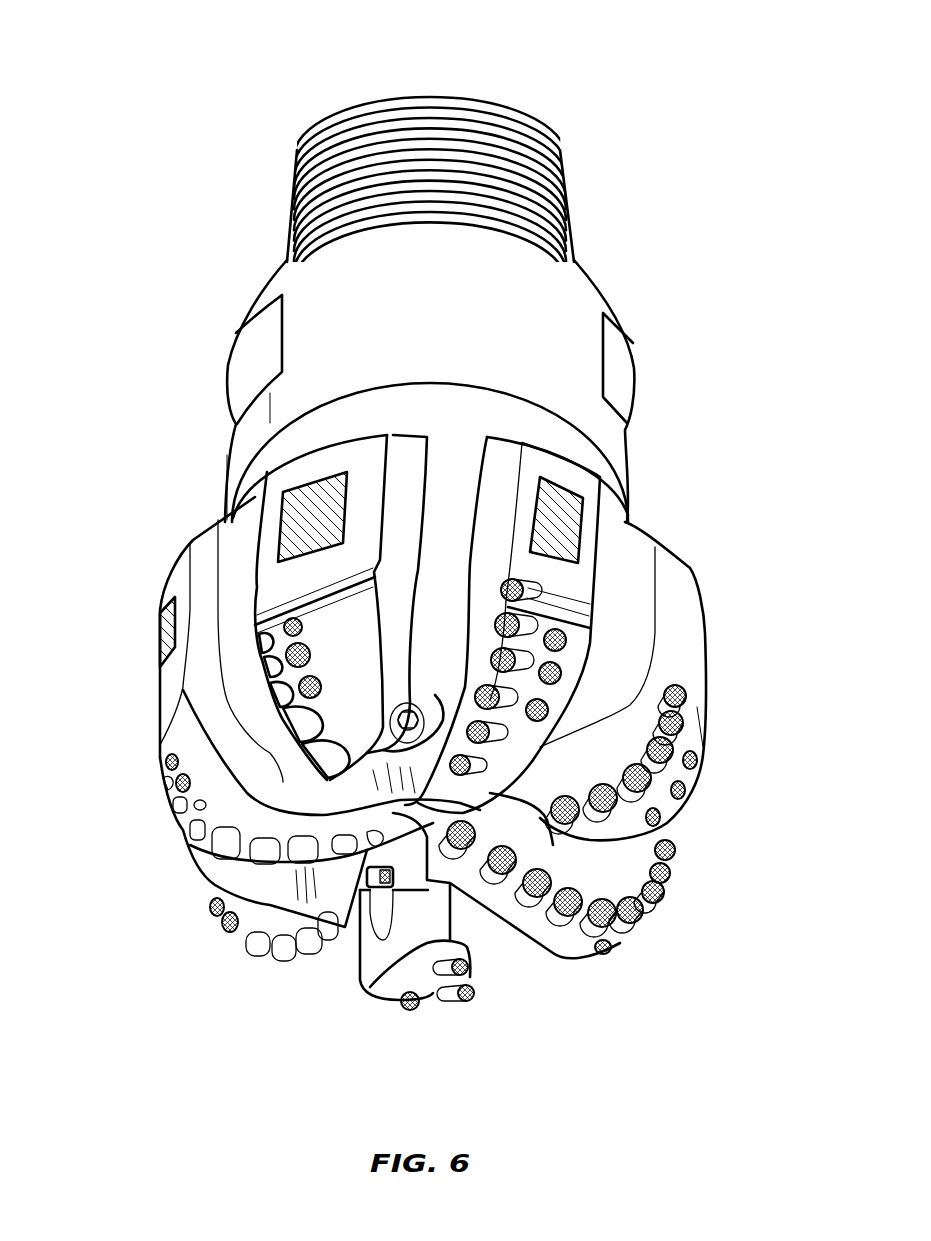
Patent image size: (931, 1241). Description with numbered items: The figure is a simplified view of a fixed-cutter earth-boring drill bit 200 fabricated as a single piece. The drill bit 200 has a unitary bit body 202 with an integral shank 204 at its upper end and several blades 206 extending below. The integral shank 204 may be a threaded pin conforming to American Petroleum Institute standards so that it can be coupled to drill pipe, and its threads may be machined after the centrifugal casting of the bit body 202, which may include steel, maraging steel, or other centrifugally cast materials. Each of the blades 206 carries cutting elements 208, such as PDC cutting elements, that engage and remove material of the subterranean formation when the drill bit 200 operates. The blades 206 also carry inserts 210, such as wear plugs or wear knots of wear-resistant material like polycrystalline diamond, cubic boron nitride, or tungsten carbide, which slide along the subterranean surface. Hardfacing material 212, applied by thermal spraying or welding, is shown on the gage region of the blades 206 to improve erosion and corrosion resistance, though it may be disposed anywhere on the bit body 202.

The fixed-cutter earth-boring drill bit 200 is at (180, 148).
The unitary bit body 202 is at (250, 494).
The integral shank 204 is at (588, 298).
The blades 206 is at (678, 585).
The cutting elements 208 is at (697, 700).
The inserts 210 is at (688, 790).
The hardfacing material 212 is at (573, 497).